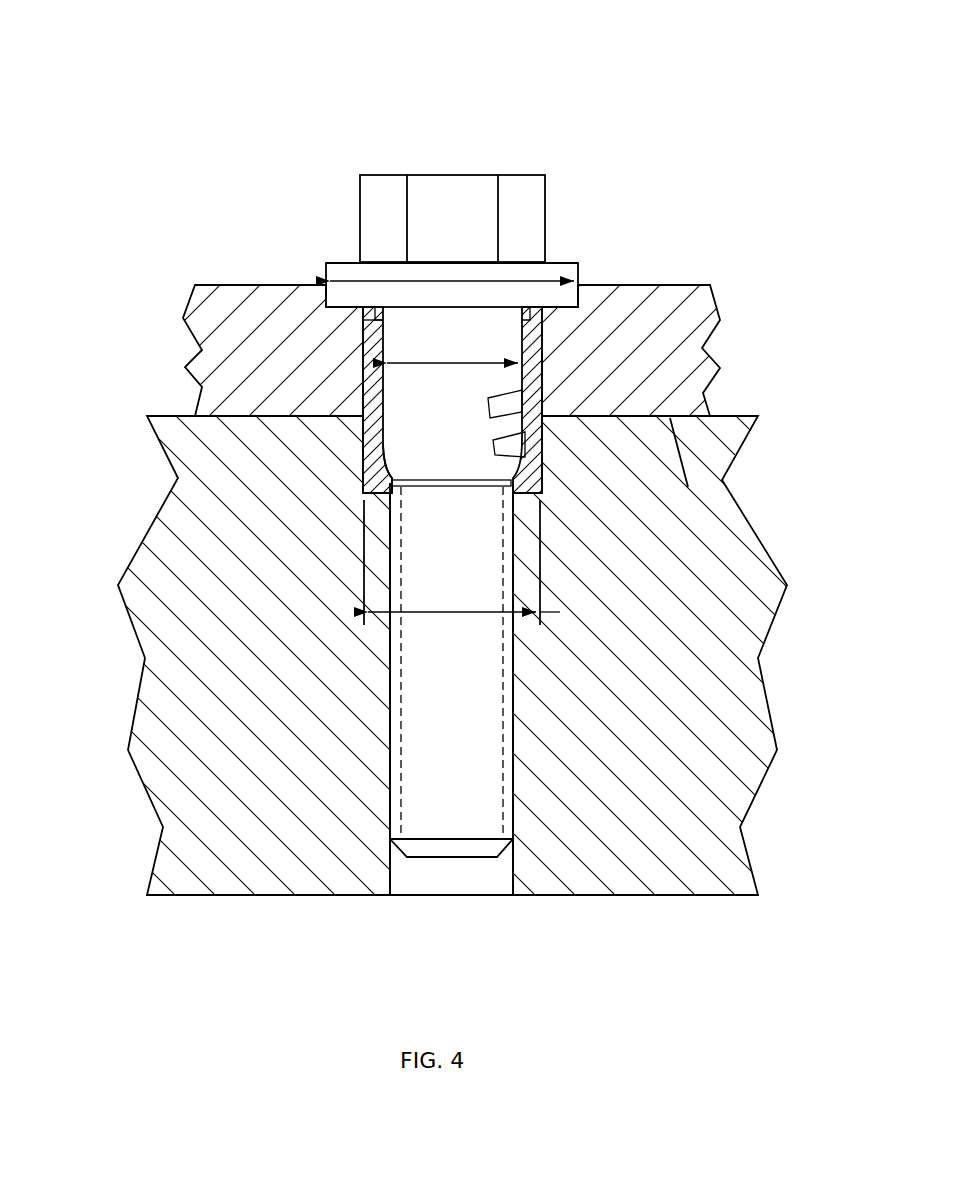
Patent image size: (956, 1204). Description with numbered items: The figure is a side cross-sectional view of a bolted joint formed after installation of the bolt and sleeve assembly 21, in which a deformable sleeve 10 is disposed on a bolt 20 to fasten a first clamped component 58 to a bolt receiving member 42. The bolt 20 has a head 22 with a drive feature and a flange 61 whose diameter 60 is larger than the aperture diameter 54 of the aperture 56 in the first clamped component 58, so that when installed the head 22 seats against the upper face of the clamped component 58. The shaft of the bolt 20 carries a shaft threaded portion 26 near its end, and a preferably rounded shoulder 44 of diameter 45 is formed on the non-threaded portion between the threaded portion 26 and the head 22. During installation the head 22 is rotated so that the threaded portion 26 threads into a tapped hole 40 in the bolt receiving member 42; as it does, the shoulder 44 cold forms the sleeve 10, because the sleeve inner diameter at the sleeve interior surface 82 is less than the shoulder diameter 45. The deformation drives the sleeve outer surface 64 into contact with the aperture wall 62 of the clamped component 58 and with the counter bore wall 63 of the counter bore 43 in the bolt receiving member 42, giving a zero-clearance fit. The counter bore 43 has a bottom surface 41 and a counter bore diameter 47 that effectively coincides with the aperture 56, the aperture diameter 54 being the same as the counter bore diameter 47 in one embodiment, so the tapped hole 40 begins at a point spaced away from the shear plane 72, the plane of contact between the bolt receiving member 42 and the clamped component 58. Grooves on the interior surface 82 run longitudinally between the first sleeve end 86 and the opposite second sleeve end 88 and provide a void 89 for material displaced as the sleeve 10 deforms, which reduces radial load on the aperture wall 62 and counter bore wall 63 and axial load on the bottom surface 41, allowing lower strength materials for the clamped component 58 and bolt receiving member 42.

The deformable sleeve 10 is at (642, 389).
The bolt 20 is at (575, 190).
The bolt and sleeve assembly 21 is at (334, 154).
The head 22 is at (452, 180).
The shaft threaded portion 26 is at (395, 782).
The tapped hole 40 is at (395, 893).
The bottom surface 41 is at (224, 538).
The bolt receiving member 42 is at (639, 898).
The counter bore 43 is at (362, 428).
The shoulder 44 is at (403, 432).
The shoulder diameter 45 is at (383, 363).
The counter bore diameter 47 is at (294, 586).
The aperture diameter 54 is at (452, 562).
The aperture 56 is at (456, 400).
The first clamped component 58 is at (192, 378).
The flange diameter 60 is at (375, 233).
The flange 61 is at (418, 197).
The aperture wall 62 is at (665, 369).
The counter bore wall 63 is at (235, 506).
The sleeve outer surface 64 is at (689, 327).
The shear plane 72 is at (755, 452).
The sleeve interior surface 82 is at (669, 489).
The first sleeve end 86 is at (456, 400).
The second sleeve end 88 is at (542, 532).
The void 89 is at (372, 350).